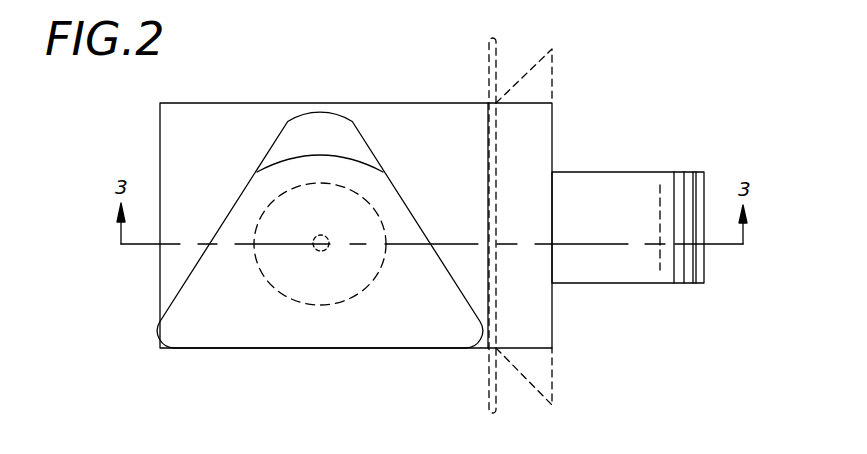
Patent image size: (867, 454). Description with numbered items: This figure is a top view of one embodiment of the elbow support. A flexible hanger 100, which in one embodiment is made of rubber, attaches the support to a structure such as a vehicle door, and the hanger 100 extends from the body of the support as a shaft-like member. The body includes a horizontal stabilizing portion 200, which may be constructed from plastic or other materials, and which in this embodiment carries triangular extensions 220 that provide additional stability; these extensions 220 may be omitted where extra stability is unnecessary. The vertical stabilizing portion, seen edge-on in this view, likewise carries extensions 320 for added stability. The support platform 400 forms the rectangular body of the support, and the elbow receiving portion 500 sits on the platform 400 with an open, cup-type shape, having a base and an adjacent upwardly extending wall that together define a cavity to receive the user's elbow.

The flexible hanger 100 is at (618, 270).
The horizontal stabilizing portion 200 is at (542, 148).
The extensions 220 is at (542, 83).
The extensions 320 is at (495, 393).
The support platform 400 is at (195, 150).
The elbow receiving portion 500 is at (358, 332).